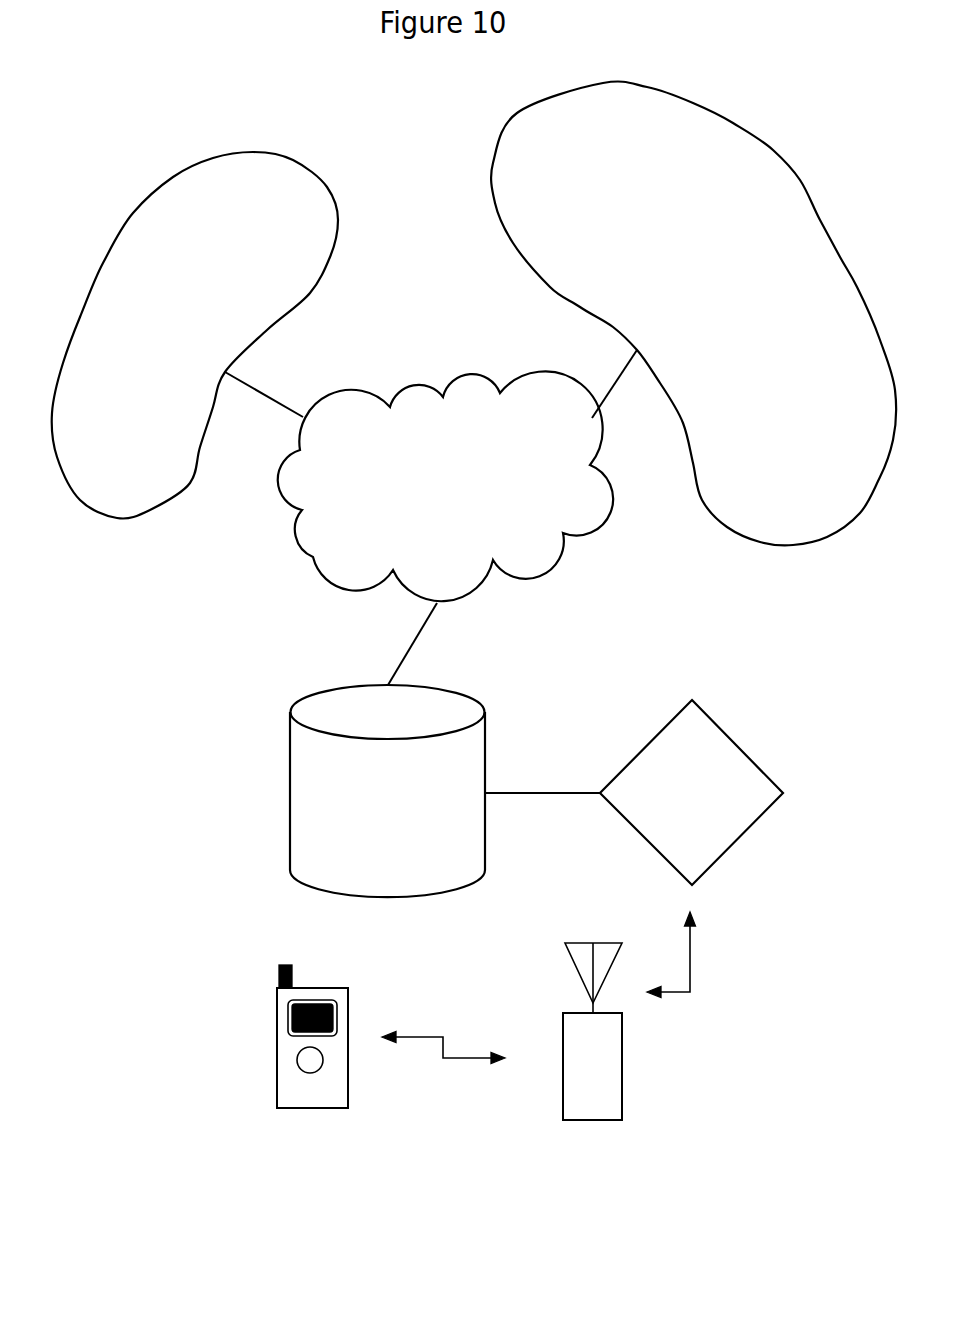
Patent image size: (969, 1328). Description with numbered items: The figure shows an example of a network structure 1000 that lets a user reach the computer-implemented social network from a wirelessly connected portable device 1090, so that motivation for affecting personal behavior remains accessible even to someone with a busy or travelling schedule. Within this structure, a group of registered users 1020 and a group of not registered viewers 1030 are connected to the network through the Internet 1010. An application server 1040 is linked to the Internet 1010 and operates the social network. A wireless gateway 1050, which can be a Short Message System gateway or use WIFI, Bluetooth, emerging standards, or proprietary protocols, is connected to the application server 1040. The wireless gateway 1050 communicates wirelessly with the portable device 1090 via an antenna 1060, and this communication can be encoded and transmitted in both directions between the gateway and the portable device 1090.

The network structure 1000 is at (120, 1196).
The Internet 1010 is at (455, 534).
The registered users 1020 is at (195, 402).
The not registered viewers 1030 is at (747, 418).
The application server 1040 is at (258, 716).
The wireless gateway 1050 is at (772, 864).
The antenna 1060 is at (599, 1141).
The portable device 1090 is at (322, 1139).